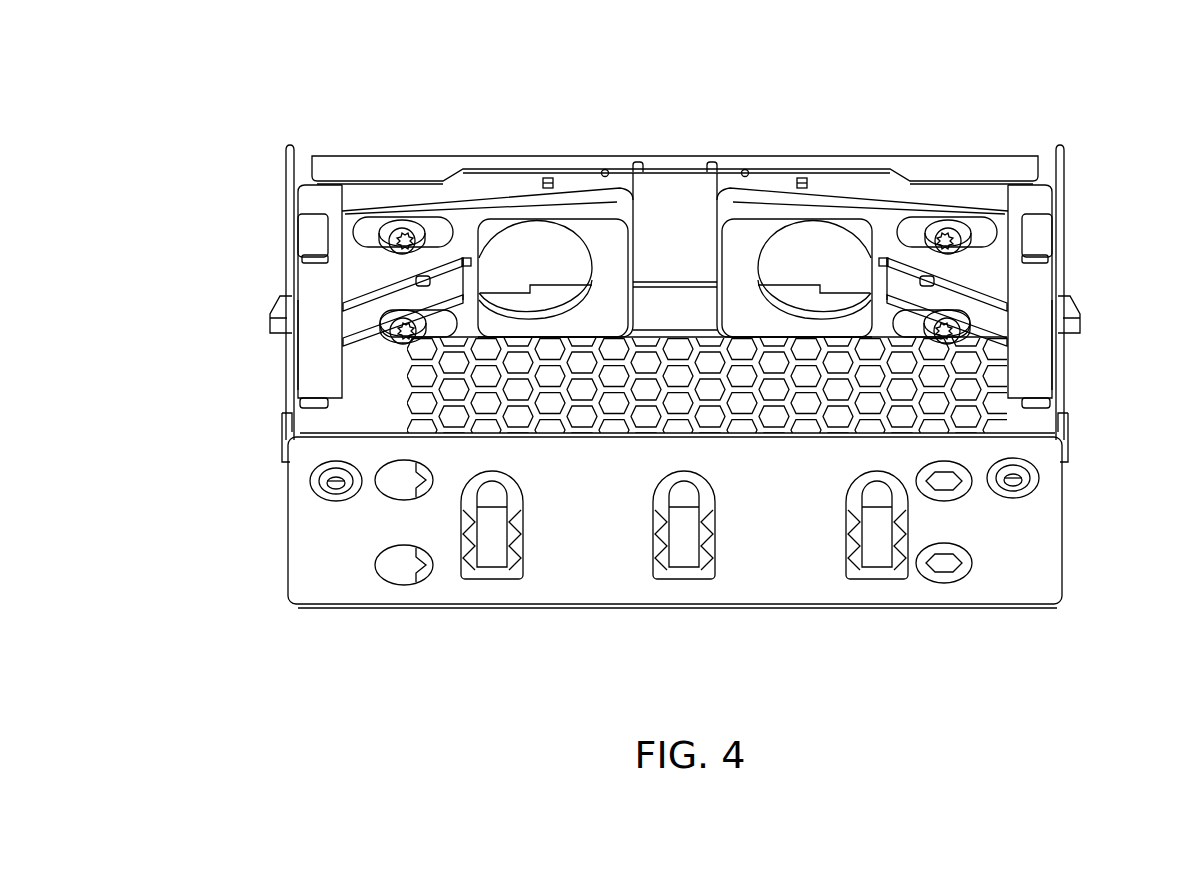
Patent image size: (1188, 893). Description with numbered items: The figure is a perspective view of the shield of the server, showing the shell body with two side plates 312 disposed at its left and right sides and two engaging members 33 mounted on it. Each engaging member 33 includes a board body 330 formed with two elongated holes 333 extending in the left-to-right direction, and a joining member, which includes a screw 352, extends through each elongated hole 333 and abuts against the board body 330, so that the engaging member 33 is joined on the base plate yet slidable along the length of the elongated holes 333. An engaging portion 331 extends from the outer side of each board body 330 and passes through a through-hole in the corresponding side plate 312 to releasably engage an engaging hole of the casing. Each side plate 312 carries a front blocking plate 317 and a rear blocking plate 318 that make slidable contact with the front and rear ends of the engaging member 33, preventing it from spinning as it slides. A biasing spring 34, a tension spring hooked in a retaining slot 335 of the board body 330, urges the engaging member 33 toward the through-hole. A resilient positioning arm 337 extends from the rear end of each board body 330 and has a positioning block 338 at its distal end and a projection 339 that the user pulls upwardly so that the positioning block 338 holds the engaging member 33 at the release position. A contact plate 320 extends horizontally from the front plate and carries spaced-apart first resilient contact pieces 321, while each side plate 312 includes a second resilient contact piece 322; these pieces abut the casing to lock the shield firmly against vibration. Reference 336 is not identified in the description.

The engaging member 33 is at (393, 190).
The biasing spring 34 is at (426, 282).
The side plate 312 is at (288, 352).
The front blocking plate 317 is at (310, 402).
The rear blocking plate 318 is at (312, 232).
The contact plate 320 is at (770, 533).
The first resilient contact piece 321 is at (688, 545).
The second resilient contact piece 322 is at (283, 430).
The board body 330 is at (583, 220).
The engaging portion 331 is at (272, 323).
The elongated hole 333 is at (449, 226).
The retaining slot 335 is at (471, 262).
The hook 336 is at (277, 298).
The resilient positioning arm 337 is at (607, 170).
The positioning block 338 is at (640, 165).
The projection 339 is at (549, 178).
The screw 352 is at (416, 224).